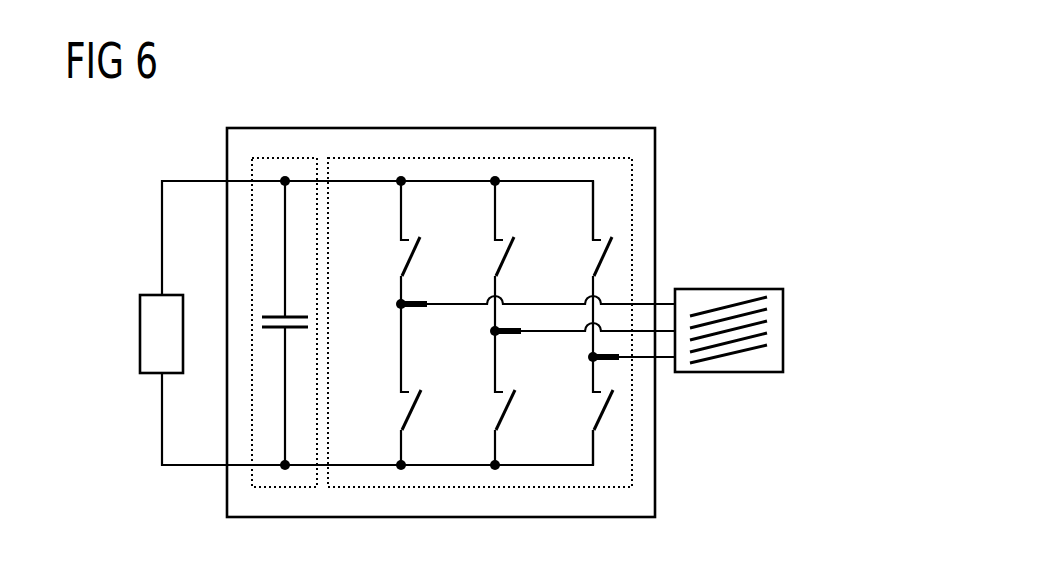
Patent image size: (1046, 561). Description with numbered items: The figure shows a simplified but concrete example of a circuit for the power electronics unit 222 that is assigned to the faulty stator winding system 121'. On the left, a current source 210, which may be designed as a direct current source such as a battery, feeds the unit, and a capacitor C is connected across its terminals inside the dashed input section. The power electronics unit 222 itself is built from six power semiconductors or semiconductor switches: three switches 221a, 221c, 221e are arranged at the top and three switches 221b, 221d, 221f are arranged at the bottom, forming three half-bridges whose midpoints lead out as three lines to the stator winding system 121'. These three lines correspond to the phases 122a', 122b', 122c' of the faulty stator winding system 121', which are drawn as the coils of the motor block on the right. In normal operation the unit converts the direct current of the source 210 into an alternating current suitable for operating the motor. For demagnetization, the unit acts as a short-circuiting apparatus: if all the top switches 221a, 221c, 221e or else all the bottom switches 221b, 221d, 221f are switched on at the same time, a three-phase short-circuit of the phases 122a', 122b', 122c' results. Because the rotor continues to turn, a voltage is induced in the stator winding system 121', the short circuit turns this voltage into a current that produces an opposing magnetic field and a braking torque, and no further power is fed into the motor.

The power electronics unit 222 is at (439, 127).
The current source 210 is at (140, 333).
The capacitor C is at (260, 321).
The semiconductor switch 221a is at (408, 258).
The semiconductor switch 221b is at (408, 411).
The semiconductor switch 221c is at (502, 258).
The semiconductor switch 221d is at (502, 411).
The semiconductor switch 221e is at (600, 258).
The semiconductor switch 221f is at (600, 411).
The stator winding system 121' is at (729, 295).
The phase 122a' is at (763, 283).
The phase 122b' is at (780, 334).
The phase 122c' is at (763, 381).